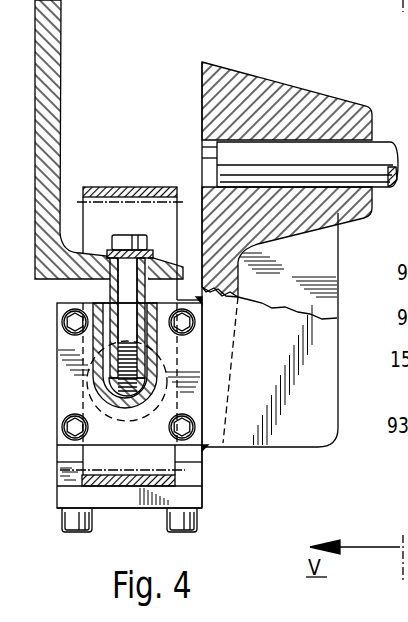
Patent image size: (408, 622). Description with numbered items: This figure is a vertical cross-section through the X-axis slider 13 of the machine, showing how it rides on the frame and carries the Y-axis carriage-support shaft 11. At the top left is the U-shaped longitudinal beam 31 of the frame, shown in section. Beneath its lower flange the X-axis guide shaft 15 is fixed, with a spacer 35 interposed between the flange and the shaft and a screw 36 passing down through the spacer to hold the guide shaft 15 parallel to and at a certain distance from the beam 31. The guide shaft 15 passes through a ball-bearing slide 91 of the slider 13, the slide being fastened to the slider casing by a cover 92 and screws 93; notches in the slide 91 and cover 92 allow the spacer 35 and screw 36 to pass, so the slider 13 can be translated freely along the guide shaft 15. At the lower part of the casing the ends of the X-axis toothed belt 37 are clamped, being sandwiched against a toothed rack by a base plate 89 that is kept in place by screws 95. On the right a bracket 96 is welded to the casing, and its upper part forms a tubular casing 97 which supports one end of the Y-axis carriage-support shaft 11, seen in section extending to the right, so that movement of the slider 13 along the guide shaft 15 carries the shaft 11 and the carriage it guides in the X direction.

The Y-axis carriage-support shaft 11 is at (383, 150).
The X-axis slider 13 is at (52, 362).
The X-axis guide shaft 15 is at (117, 402).
The longitudinal beam 31 is at (45, 78).
The spacer 35 is at (110, 290).
The screw 36 is at (128, 243).
The X-axis toothed belt 37 is at (125, 187).
The base plate 89 is at (67, 490).
The ball-bearing slide 91 is at (167, 352).
The cover 92 is at (67, 385).
The screw 93 is at (55, 438).
The screw 95 is at (167, 520).
The bracket 96 is at (240, 283).
The tubular casing 97 is at (295, 218).